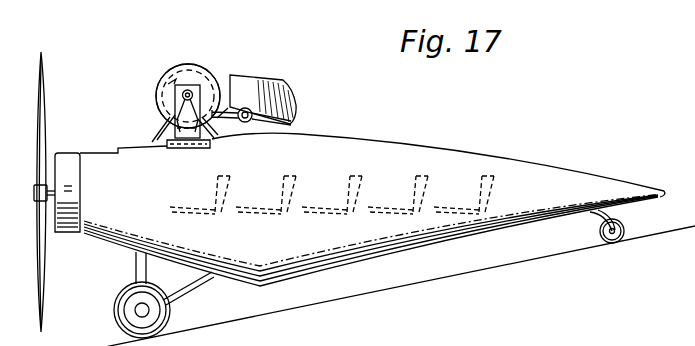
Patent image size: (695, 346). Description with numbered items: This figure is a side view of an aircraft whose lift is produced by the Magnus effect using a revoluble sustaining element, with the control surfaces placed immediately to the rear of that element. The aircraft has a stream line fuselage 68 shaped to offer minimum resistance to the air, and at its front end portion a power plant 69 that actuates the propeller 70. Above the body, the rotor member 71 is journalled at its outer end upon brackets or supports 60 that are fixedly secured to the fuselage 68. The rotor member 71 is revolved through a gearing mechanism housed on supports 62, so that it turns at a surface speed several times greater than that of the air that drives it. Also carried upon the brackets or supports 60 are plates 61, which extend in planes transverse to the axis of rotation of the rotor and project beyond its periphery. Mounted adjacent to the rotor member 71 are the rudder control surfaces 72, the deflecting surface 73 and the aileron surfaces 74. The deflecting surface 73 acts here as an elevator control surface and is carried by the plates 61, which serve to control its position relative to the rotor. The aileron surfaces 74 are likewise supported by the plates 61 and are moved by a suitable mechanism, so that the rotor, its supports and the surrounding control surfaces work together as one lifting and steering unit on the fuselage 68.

The brackets or supports 60 is at (167, 143).
The plates 61 is at (208, 83).
The supports 62 is at (175, 120).
The fuselage 68 is at (368, 263).
The power plant 69 is at (95, 163).
The propeller 70 is at (43, 62).
The rotor member 71 is at (187, 65).
The rudder control surfaces 72 is at (283, 92).
The deflecting surface 73 is at (229, 108).
The aileron surfaces 74 is at (297, 122).